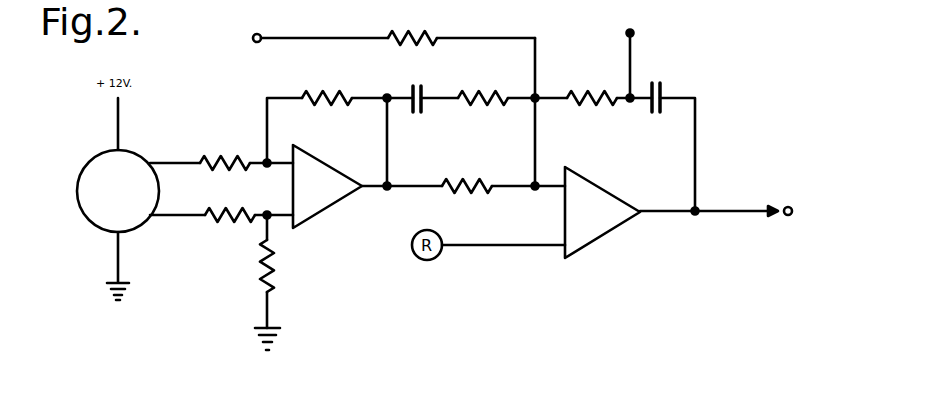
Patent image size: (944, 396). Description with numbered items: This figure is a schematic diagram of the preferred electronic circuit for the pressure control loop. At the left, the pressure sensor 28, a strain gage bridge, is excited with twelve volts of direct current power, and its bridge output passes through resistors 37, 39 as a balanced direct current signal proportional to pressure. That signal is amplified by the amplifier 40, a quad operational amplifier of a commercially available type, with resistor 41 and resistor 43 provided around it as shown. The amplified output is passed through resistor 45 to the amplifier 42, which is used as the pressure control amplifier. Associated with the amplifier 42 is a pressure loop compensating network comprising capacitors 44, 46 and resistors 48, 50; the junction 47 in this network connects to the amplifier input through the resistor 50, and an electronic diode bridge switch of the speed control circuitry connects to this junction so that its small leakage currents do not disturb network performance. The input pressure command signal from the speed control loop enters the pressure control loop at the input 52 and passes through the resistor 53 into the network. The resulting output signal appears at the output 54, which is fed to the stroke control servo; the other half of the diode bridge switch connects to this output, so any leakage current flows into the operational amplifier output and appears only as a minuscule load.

The pressure sensor 28 is at (96, 158).
The resistor 37 is at (222, 157).
The resistor 39 is at (224, 226).
The amplifier 40 is at (320, 168).
The resistor 41 is at (276, 268).
The amplifier 42 is at (594, 191).
The resistor 43 is at (326, 91).
The capacitor 44 is at (415, 88).
The resistor 45 is at (456, 178).
The capacitor 46 is at (658, 84).
The junction 47 is at (632, 33).
The resistor 48 is at (491, 93).
The resistor 50 is at (602, 92).
The input 52 is at (259, 37).
The resistor 53 is at (415, 33).
The output 54 is at (790, 206).